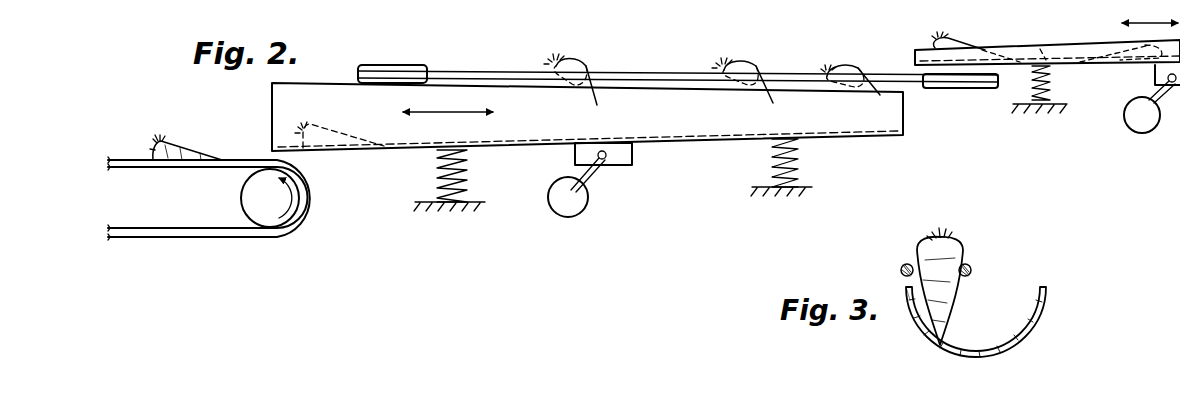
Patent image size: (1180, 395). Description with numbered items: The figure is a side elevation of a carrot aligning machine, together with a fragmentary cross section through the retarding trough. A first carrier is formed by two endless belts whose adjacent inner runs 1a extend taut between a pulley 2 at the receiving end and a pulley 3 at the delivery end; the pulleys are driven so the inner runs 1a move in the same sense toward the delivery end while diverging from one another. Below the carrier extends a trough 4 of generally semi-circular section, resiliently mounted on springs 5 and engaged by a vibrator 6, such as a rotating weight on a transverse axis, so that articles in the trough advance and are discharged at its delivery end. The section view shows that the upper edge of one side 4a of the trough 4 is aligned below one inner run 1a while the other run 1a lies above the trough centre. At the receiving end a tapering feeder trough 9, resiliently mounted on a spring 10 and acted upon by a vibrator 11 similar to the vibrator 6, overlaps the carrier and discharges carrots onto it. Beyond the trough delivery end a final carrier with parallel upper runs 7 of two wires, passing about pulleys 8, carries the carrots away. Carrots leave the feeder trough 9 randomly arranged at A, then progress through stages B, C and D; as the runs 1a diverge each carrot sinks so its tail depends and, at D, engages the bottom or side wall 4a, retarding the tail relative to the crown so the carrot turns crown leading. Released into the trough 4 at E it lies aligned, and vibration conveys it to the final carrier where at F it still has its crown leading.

In FIG. 2, the pulley at receiving end 2 is at (962, 89).
In FIG. 2, the pulley at delivery end 3 is at (430, 52).
In FIG. 2, the trough 4 is at (388, 142).
In FIG. 3, the trough 4 is at (1003, 327).
In FIG. 3, the side of trough 4a is at (905, 300).
In FIG. 2, the springs 5 is at (467, 172).
In FIG. 2, the vibrator 6 is at (598, 186).
In FIG. 2, the upper runs of final carrier 7 is at (124, 160).
In FIG. 2, the pulleys at receiving end of final carrier 8 is at (282, 237).
In FIG. 2, the feeder trough 9 is at (1083, 50).
In FIG. 2, the spring 10 is at (1053, 95).
In FIG. 2, the vibrator 11 is at (1176, 108).
In FIG. 3, the inner runs of belts 1a is at (904, 263).
In FIG. 2, the carrots randomly arranged A is at (1042, 44).
In FIG. 2, the carrot stage B is at (843, 68).
In FIG. 2, the carrot stage C is at (746, 66).
In FIG. 2, the carrot with depending tail D is at (576, 62).
In FIG. 3, the carrot with depending tail D is at (957, 250).
In FIG. 2, the aligned carrot in trough E is at (318, 126).
In FIG. 2, the carrot on final conveyor F is at (196, 148).